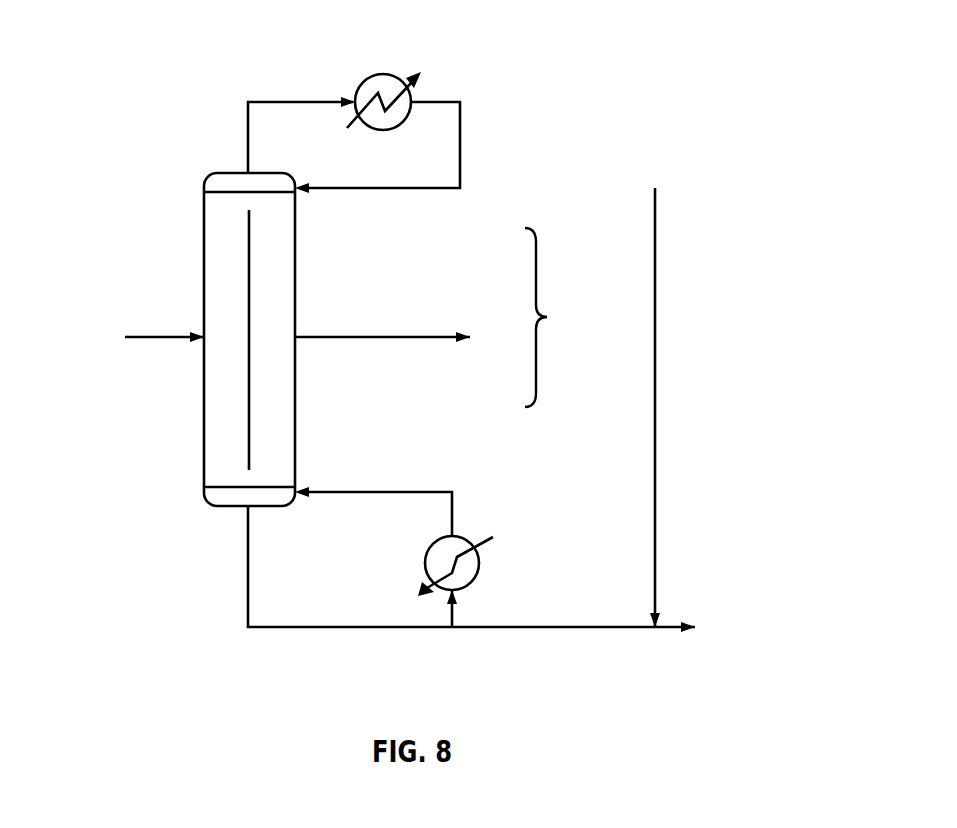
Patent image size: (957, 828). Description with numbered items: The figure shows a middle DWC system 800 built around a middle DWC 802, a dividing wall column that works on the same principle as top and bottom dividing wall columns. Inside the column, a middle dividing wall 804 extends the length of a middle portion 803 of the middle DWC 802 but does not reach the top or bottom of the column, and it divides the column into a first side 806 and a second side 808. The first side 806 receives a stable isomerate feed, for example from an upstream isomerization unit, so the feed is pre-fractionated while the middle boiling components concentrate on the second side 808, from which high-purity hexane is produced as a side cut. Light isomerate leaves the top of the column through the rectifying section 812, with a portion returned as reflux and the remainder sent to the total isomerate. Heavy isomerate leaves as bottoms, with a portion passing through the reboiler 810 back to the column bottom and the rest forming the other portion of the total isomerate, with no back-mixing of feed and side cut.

The middle DWC system 800 is at (178, 80).
The middle DWC 802 is at (318, 293).
The middle portion 803 is at (558, 317).
The middle dividing wall 804 is at (243, 298).
The first side 806 is at (215, 237).
The second side 808 is at (280, 242).
The reboiler 810 is at (425, 565).
The rectifying section 812 is at (364, 77).